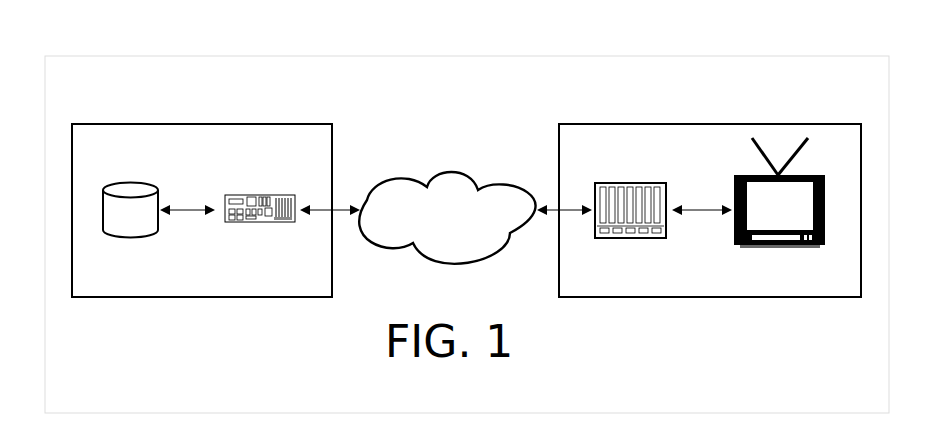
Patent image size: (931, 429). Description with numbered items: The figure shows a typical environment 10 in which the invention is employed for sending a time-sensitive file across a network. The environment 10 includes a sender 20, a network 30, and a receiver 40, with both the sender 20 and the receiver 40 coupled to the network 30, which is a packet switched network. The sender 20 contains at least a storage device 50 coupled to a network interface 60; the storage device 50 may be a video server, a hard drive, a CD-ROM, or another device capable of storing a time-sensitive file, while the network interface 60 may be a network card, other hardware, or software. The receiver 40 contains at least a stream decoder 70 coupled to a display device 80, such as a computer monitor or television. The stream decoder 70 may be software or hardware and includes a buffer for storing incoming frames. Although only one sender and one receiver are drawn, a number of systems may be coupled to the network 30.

The environment 10 is at (350, 56).
The sender 20 is at (202, 124).
The network 30 is at (458, 172).
The receiver 40 is at (718, 124).
The storage device 50 is at (130, 238).
The network interface 60 is at (243, 224).
The stream decoder 70 is at (630, 238).
The display device 80 is at (773, 248).